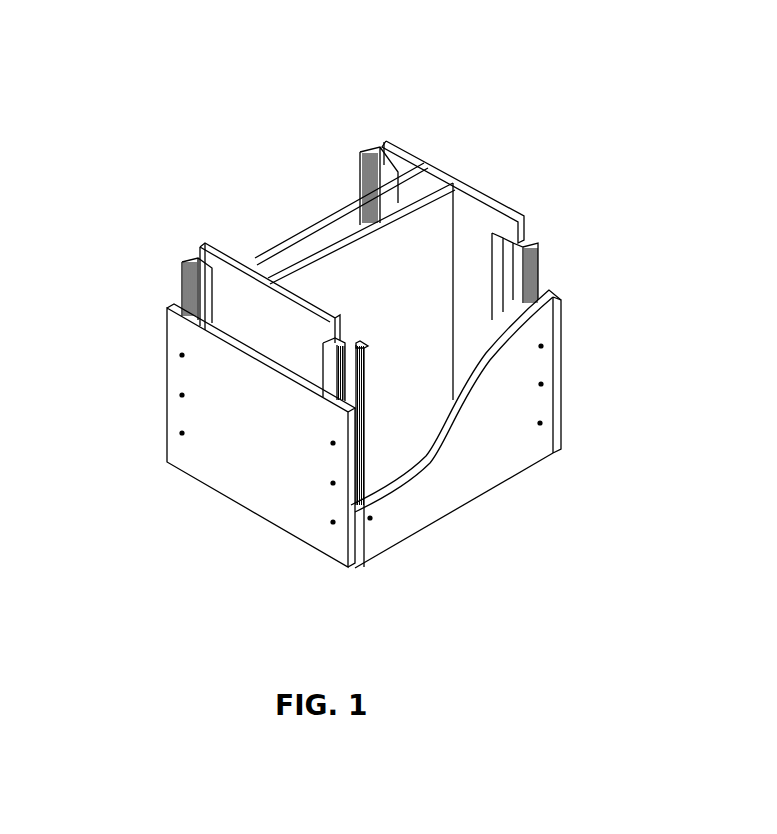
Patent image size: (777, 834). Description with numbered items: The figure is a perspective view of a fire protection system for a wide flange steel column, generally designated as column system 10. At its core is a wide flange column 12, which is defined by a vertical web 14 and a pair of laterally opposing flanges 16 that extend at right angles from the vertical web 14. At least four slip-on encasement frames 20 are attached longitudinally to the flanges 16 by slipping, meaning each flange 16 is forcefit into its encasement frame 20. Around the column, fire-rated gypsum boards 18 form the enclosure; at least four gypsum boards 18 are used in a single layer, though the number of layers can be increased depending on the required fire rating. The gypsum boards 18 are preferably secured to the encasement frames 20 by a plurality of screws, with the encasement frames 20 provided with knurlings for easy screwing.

The fire protection system for wide flange steel column 10 is at (466, 72).
The wide flange column 12 is at (532, 218).
The vertical web 14 is at (397, 427).
The flanges 16 is at (238, 318).
The gypsum boards 18 is at (228, 502).
The slip-on encasement frame 20 is at (544, 267).